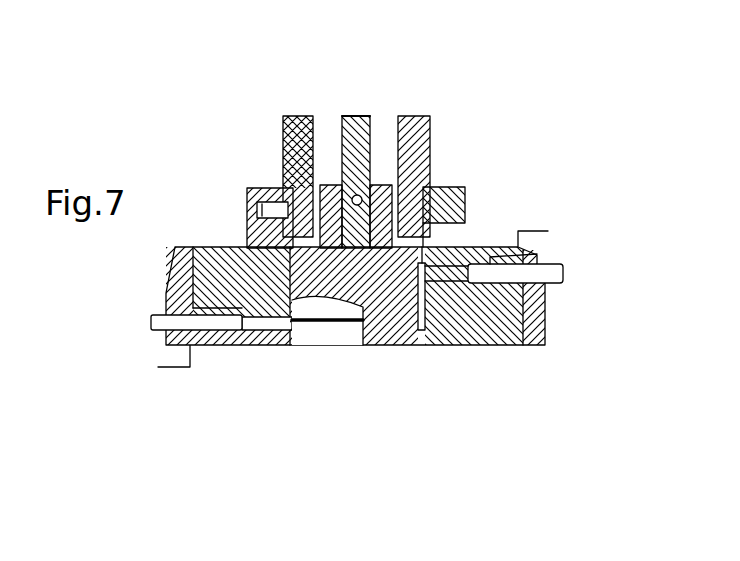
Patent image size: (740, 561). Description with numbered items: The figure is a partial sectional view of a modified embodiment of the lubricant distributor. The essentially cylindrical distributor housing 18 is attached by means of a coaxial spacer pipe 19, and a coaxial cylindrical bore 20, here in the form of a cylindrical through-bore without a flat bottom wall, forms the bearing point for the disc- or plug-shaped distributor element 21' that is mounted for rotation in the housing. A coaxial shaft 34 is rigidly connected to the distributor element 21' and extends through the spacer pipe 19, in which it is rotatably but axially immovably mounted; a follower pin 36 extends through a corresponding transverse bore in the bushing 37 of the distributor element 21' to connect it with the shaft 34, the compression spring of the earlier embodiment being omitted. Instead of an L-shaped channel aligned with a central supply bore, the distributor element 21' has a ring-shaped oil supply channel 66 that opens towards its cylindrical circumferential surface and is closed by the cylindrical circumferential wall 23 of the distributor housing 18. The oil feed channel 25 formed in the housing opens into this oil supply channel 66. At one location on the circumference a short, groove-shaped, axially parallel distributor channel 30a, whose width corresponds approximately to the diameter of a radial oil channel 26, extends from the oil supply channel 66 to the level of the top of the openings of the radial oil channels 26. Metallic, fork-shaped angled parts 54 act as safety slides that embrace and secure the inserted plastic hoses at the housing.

The distributor housing 18 is at (483, 317).
The spacer pipe 19 is at (414, 150).
The bore 20 is at (421, 344).
The distributor element 21' is at (255, 171).
The cylindrical circumferential wall 23 is at (321, 245).
The oil feed channel 25 is at (282, 335).
The radial oil channel 26 is at (462, 262).
The distributor channel 30a is at (448, 297).
The shaft 34 is at (353, 116).
The follower pin 36 is at (370, 158).
The bushing 37 is at (347, 278).
The angled part 54 is at (190, 368).
The oil supply channel 66 is at (328, 324).